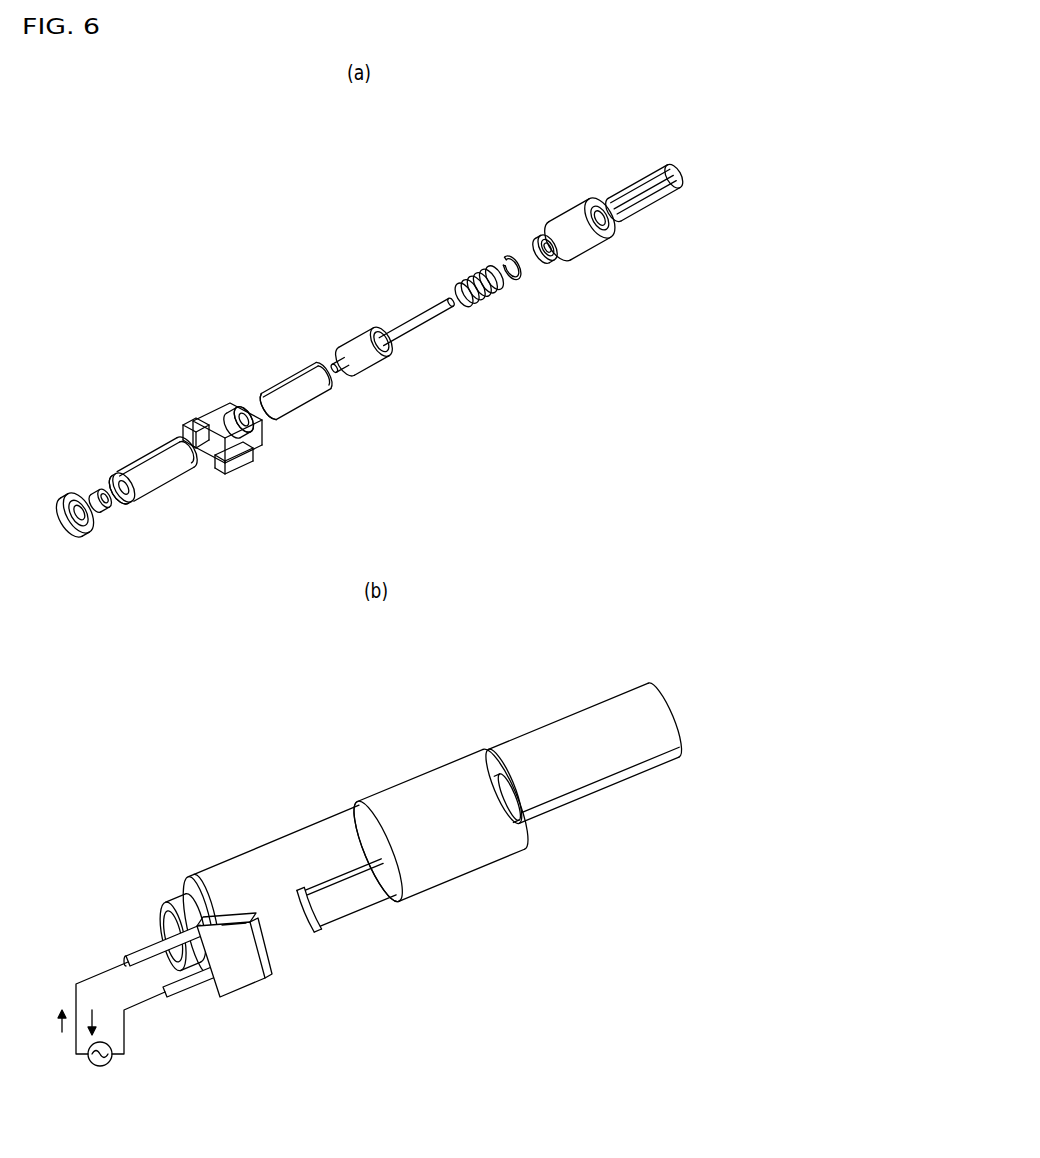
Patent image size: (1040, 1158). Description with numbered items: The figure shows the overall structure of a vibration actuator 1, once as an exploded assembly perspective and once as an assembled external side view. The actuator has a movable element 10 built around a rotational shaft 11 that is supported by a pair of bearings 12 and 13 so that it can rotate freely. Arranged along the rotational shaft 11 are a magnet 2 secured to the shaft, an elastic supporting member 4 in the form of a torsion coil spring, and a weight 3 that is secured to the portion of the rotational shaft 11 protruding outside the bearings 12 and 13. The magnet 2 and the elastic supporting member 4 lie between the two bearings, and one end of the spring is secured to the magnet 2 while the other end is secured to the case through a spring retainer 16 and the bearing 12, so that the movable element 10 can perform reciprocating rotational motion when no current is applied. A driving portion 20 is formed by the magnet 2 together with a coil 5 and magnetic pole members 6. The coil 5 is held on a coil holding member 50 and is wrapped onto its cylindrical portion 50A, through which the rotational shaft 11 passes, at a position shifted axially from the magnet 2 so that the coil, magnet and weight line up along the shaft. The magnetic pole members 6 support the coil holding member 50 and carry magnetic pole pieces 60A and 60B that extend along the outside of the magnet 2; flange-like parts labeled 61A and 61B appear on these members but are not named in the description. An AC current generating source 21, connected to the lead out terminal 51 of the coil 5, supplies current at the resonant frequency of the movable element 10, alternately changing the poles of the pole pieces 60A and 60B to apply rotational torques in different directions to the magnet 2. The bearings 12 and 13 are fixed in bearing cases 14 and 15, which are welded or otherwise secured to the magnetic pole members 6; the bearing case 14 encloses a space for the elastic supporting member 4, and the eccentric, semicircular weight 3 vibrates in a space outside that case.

The vibration actuator 1 is at (627, 116).
The magnet 2 is at (352, 333).
The weight 3 is at (659, 213).
The elastic supporting member 4 is at (477, 308).
The coil 5 is at (216, 416).
The magnetic pole members 6 is at (131, 513).
The movable element 10 is at (666, 723).
The rotational shaft 11 is at (409, 338).
The bearing 12 is at (535, 233).
The bearing 13 is at (101, 494).
The bearing case 14 is at (578, 247).
The bearing case 15 is at (66, 502).
The spring retainer 16 is at (518, 288).
The driving portion 20 is at (271, 944).
The AC current generating source 21 is at (113, 1058).
The coil holding member 50 is at (237, 405).
The cylindrical portion 50A is at (240, 468).
The lead out terminal 51 is at (173, 437).
The magnetic pole piece 60A is at (307, 413).
The magnetic pole piece 60B is at (140, 457).
The flange of 60A 61A is at (258, 446).
The flange of 60B 61B is at (114, 512).